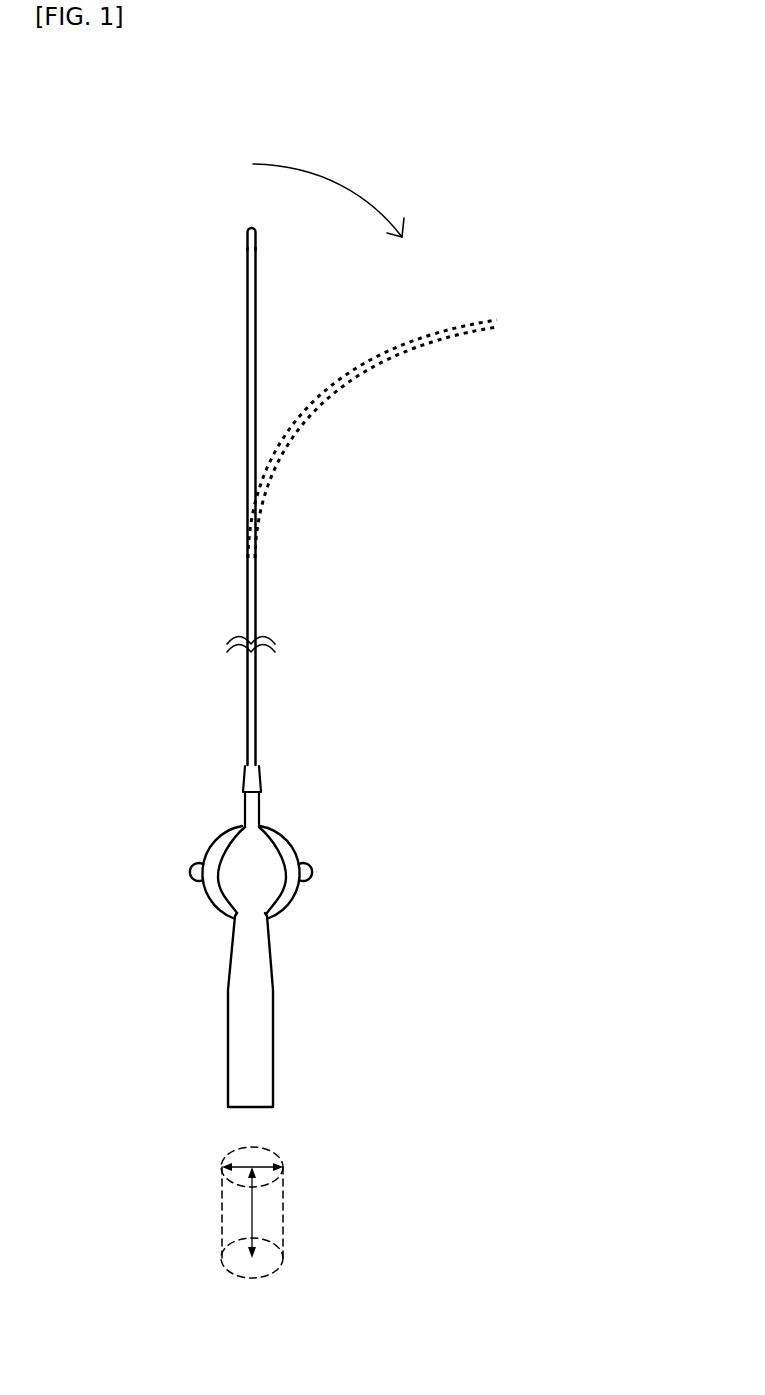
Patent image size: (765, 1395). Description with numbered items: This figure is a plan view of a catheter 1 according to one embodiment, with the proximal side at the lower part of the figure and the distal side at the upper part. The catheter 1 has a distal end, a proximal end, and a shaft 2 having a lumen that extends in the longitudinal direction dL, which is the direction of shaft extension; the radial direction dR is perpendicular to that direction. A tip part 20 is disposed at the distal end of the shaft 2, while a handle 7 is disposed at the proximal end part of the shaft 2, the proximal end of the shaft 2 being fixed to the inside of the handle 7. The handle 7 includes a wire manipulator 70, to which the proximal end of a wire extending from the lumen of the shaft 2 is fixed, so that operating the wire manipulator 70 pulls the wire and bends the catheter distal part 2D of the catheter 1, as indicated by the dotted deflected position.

The catheter 1 is at (88, 156).
The tip part 20 is at (247, 233).
The shaft 2 is at (247, 703).
The catheter distal part 2D is at (545, 234).
The wire manipulator 70 is at (308, 872).
The handle 7 is at (273, 995).
The radial direction dR is at (262, 1165).
The longitudinal direction dL is at (253, 1198).